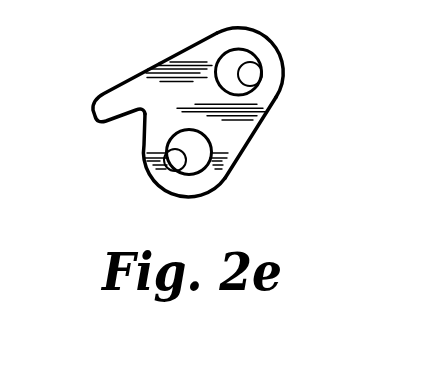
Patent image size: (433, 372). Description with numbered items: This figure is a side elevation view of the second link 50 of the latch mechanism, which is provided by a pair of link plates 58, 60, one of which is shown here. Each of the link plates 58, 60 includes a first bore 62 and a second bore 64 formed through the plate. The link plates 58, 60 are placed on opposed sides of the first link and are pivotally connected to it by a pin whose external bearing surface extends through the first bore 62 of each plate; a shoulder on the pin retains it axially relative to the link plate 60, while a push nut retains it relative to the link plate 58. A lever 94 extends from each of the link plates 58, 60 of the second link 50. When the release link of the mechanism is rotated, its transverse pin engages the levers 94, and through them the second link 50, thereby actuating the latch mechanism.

The second link 50 is at (138, 73).
The link plate 58 is at (286, 140).
The link plate 60 is at (246, 146).
The first bore 62 is at (168, 143).
The second bore 64 is at (241, 67).
The lever 94 is at (103, 125).